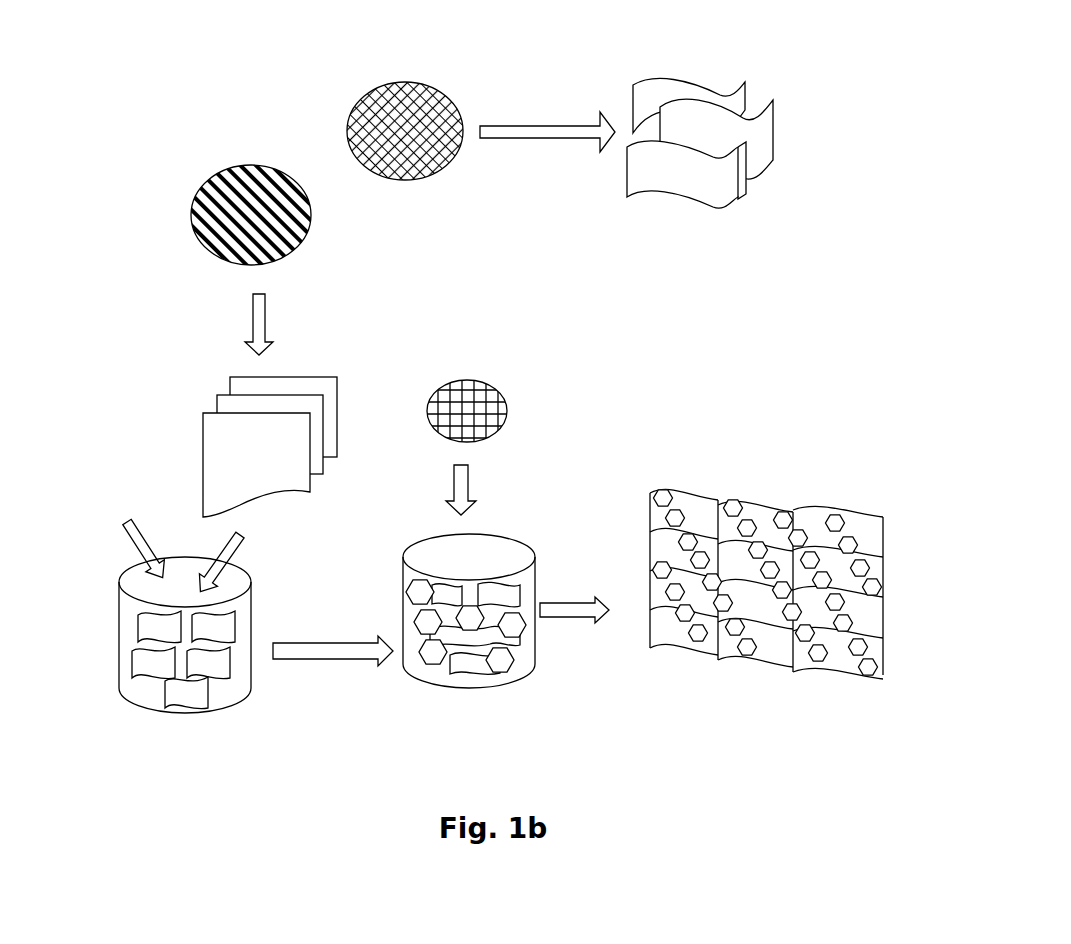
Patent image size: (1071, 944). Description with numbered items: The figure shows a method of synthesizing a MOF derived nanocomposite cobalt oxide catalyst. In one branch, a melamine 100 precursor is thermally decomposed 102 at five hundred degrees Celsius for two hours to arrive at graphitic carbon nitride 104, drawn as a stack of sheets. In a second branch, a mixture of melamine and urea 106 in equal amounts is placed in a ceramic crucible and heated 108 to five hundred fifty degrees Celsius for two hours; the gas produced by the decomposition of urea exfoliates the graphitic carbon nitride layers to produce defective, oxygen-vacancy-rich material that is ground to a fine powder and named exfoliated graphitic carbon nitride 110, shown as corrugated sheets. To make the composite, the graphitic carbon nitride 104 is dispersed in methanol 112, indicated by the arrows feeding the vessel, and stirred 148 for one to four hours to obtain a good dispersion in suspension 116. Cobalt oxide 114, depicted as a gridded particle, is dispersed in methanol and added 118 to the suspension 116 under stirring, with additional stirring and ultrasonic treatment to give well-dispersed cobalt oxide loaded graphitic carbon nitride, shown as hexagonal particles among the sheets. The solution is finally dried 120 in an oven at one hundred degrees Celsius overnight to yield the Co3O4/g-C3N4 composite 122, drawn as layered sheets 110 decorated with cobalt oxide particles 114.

The melamine precursor 100 is at (222, 218).
The thermal decomposition 102 is at (258, 329).
The graphitic carbon nitride 104 is at (332, 395).
The mixture of melamine and urea 106 is at (380, 108).
The heating 108 is at (520, 133).
The exfoliated graphitic carbon nitride 110 is at (762, 123).
The methanol 112 is at (130, 540).
The cobalt oxide 114 is at (468, 410).
The suspension 116 is at (245, 693).
The adding 118 is at (460, 483).
The drying 120 is at (565, 607).
The Co3O4/g-C3N4 composite 122 is at (695, 481).
The stirring 148 is at (318, 648).